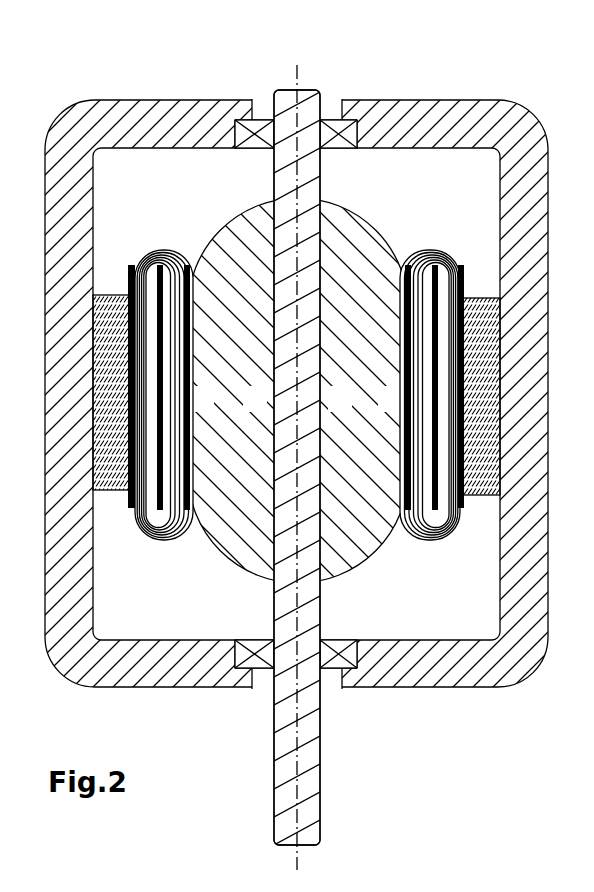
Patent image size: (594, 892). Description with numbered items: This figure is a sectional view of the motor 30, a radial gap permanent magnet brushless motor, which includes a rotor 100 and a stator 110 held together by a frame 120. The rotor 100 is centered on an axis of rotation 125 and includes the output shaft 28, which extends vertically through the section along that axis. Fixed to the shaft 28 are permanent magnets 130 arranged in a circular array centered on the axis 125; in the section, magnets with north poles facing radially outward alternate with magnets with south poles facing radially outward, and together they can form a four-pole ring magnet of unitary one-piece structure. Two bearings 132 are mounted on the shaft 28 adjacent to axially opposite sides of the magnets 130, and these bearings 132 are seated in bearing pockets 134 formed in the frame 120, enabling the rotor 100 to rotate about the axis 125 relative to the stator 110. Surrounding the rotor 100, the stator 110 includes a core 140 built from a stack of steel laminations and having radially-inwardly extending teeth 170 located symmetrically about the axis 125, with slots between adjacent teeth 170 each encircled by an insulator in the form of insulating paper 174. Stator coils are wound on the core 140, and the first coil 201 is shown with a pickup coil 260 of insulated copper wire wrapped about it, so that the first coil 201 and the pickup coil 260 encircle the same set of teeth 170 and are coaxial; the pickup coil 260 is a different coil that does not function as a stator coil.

The motor 30 is at (296, 462).
The output shaft 28 is at (320, 800).
The axis of rotation 125 is at (297, 858).
The bearings 132 is at (345, 150).
The bearing pockets 134 is at (331, 96).
The frame 120 is at (103, 205).
The stator 110 is at (113, 288).
The core 140 is at (482, 297).
The rotor 100 is at (231, 211).
The permanent magnets 130 is at (255, 245).
The teeth 170 is at (407, 300).
The pickup coil 260 is at (442, 250).
The first coil 201 is at (445, 253).
The insulating paper 174 is at (462, 497).